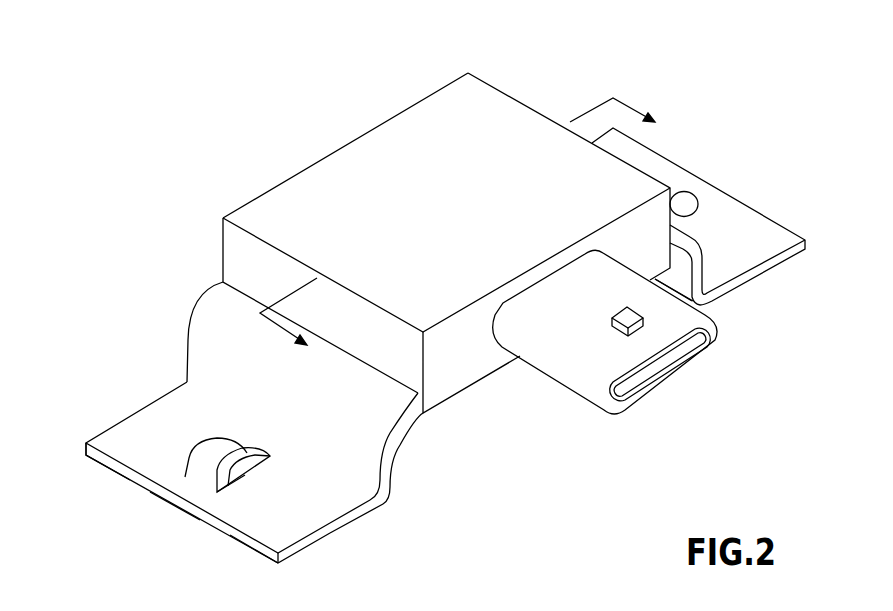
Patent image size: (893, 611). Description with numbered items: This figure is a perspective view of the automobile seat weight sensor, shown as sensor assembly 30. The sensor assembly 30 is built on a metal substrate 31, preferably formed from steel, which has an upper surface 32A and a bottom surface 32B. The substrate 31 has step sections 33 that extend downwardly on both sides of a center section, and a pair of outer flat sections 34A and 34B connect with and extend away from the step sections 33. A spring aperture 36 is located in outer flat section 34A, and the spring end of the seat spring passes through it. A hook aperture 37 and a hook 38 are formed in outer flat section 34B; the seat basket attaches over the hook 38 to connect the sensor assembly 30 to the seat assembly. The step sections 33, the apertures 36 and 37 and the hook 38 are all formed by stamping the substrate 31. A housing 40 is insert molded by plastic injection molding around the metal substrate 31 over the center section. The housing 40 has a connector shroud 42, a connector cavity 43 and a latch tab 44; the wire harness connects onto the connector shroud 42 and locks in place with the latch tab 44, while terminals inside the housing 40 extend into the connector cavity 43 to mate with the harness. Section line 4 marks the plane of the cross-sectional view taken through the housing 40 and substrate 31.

The sensor assembly 30 is at (278, 93).
The housing 40 is at (311, 178).
The section line 4- 4 is at (443, 209).
The outer flat section 34A is at (782, 235).
The spring aperture 36 is at (686, 195).
The step sections 33 is at (702, 265).
The metal substrate 31 is at (95, 440).
The upper surface 32A is at (152, 470).
The bottom surface 32B is at (182, 505).
The outer flat section 34B is at (265, 528).
The hook 38 is at (197, 447).
The hook aperture 37 is at (248, 470).
The connector shroud 42 is at (580, 380).
The connector cavity 43 is at (637, 383).
The latch tab 44 is at (645, 326).